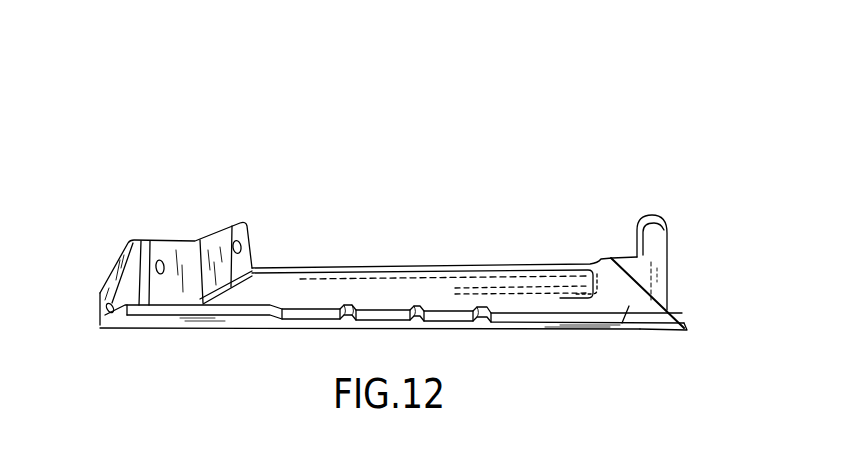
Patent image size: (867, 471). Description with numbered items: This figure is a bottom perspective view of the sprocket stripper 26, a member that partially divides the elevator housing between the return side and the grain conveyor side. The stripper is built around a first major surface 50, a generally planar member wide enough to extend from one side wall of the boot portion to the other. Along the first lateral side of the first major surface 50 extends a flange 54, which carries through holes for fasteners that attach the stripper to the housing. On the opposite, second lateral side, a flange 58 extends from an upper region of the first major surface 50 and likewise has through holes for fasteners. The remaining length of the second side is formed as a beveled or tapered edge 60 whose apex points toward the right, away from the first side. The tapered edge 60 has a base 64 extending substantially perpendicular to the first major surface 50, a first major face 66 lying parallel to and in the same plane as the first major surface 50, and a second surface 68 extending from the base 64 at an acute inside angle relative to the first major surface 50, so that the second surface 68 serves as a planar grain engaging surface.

The sprocket stripper 26 is at (525, 62).
The first major surface 50 is at (342, 292).
The flange 54 is at (207, 232).
The flange 58 is at (661, 225).
The tapered edge 60 is at (684, 318).
The base 64 is at (645, 290).
The first major face 66 is at (653, 331).
The second surface 68 is at (676, 312).